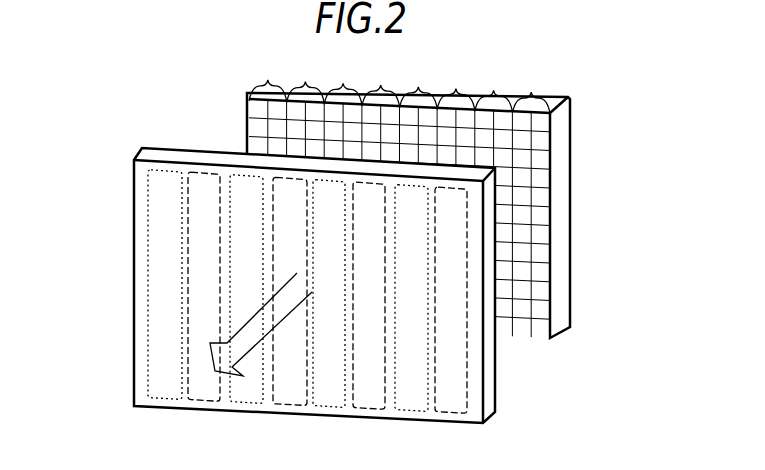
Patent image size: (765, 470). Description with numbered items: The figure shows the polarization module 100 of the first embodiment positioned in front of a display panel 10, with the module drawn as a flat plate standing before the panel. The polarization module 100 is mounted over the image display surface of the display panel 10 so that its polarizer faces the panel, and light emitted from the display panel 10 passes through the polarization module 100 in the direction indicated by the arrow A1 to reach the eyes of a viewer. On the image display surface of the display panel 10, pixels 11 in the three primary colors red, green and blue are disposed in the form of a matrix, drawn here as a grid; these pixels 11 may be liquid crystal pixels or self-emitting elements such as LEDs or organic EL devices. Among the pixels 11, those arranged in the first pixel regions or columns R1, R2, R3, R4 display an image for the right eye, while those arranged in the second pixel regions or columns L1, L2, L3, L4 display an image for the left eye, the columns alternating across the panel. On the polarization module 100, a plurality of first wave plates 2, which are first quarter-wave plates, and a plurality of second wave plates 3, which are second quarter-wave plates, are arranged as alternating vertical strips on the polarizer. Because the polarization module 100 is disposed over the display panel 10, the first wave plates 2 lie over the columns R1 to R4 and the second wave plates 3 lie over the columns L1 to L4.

The polarization module 100 is at (290, 276).
The display panel 10 is at (445, 197).
The pixels 11 is at (542, 218).
The first wave plates 2 is at (452, 448).
The second wave plates 3 is at (411, 444).
The arrow A1 is at (247, 323).
The second pixel region or column L1 is at (268, 78).
The first pixel region or column R1 is at (306, 80).
The second pixel region or column L2 is at (343, 81).
The first pixel region or column R2 is at (381, 83).
The second pixel region or column L3 is at (419, 85).
The first pixel region or column R3 is at (456, 87).
The second pixel region or column L4 is at (494, 88).
The first pixel region or column R4 is at (531, 90).